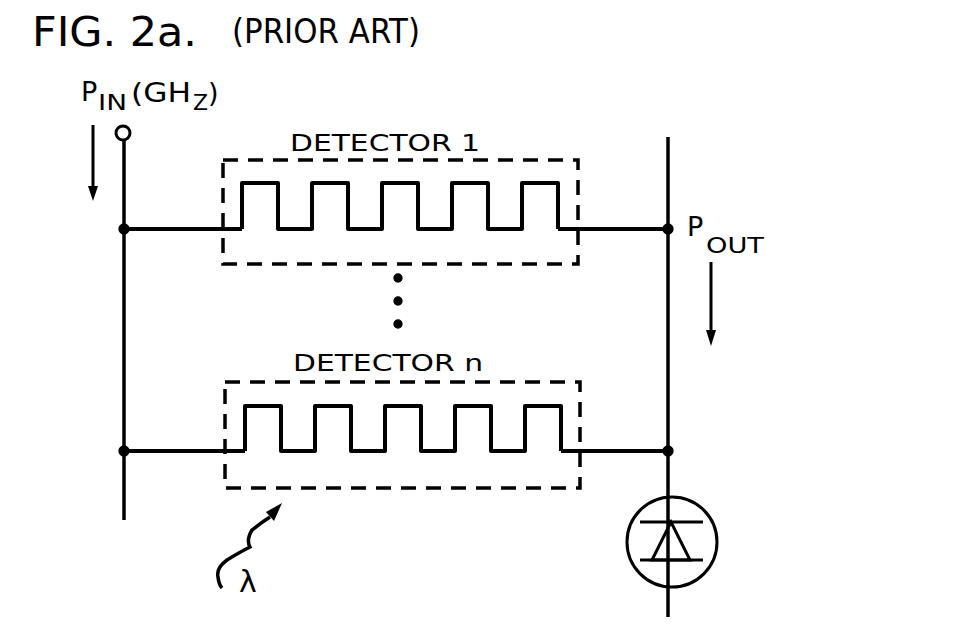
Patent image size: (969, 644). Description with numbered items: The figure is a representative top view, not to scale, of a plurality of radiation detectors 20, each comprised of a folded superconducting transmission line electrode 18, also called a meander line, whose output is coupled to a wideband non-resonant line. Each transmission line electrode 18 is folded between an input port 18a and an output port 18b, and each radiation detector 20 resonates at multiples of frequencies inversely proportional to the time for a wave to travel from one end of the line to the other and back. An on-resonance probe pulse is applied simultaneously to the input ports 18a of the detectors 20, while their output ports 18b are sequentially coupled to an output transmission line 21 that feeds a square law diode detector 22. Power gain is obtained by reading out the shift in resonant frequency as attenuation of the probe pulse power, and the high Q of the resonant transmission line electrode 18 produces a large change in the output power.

The transmission line electrode 18 is at (293, 232).
The input port 18a is at (199, 228).
The output port 18b is at (613, 228).
The radiation detector 20 is at (523, 159).
The output transmission line 21 is at (671, 408).
The square law diode detector 22 is at (690, 582).